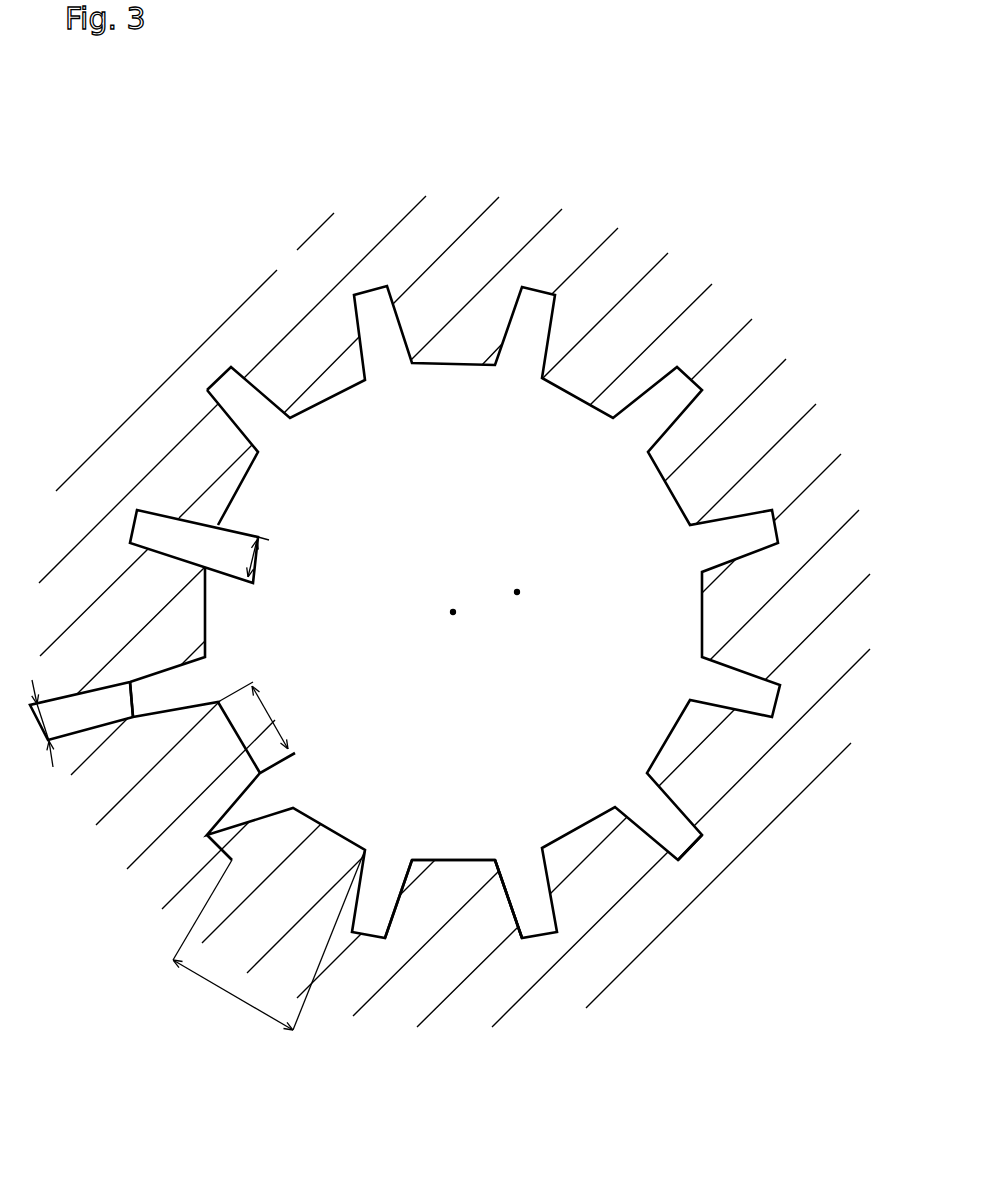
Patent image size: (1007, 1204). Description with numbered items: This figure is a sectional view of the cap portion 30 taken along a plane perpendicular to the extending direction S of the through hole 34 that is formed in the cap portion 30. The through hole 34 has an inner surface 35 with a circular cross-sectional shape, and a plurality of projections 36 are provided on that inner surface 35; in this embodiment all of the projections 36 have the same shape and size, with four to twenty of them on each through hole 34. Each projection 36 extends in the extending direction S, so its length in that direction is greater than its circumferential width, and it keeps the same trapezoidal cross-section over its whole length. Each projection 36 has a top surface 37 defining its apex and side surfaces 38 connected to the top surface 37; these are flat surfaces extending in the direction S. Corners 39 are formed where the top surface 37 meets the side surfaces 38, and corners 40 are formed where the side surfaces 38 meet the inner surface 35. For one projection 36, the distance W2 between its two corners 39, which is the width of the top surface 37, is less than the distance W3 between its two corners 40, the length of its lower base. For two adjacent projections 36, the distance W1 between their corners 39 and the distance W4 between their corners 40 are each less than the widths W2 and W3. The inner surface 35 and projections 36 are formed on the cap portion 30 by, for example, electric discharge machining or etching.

The cap portion 30 is at (302, 290).
The through hole 34 is at (517, 592).
The inner surface 35 is at (682, 850).
The projection 36 is at (235, 477).
The top surface 37 is at (453, 860).
The side surface 38 is at (395, 905).
The corner 39 is at (496, 855).
The corner 40 is at (130, 683).
The extending direction S is at (453, 610).
The distance between corners 39 of adjacent projections W1 is at (253, 562).
The width of the top surface W2 is at (270, 717).
The length of the lower base of the projection W3 is at (232, 995).
The distance between corners 40 of adjacent projections W4 is at (44, 733).